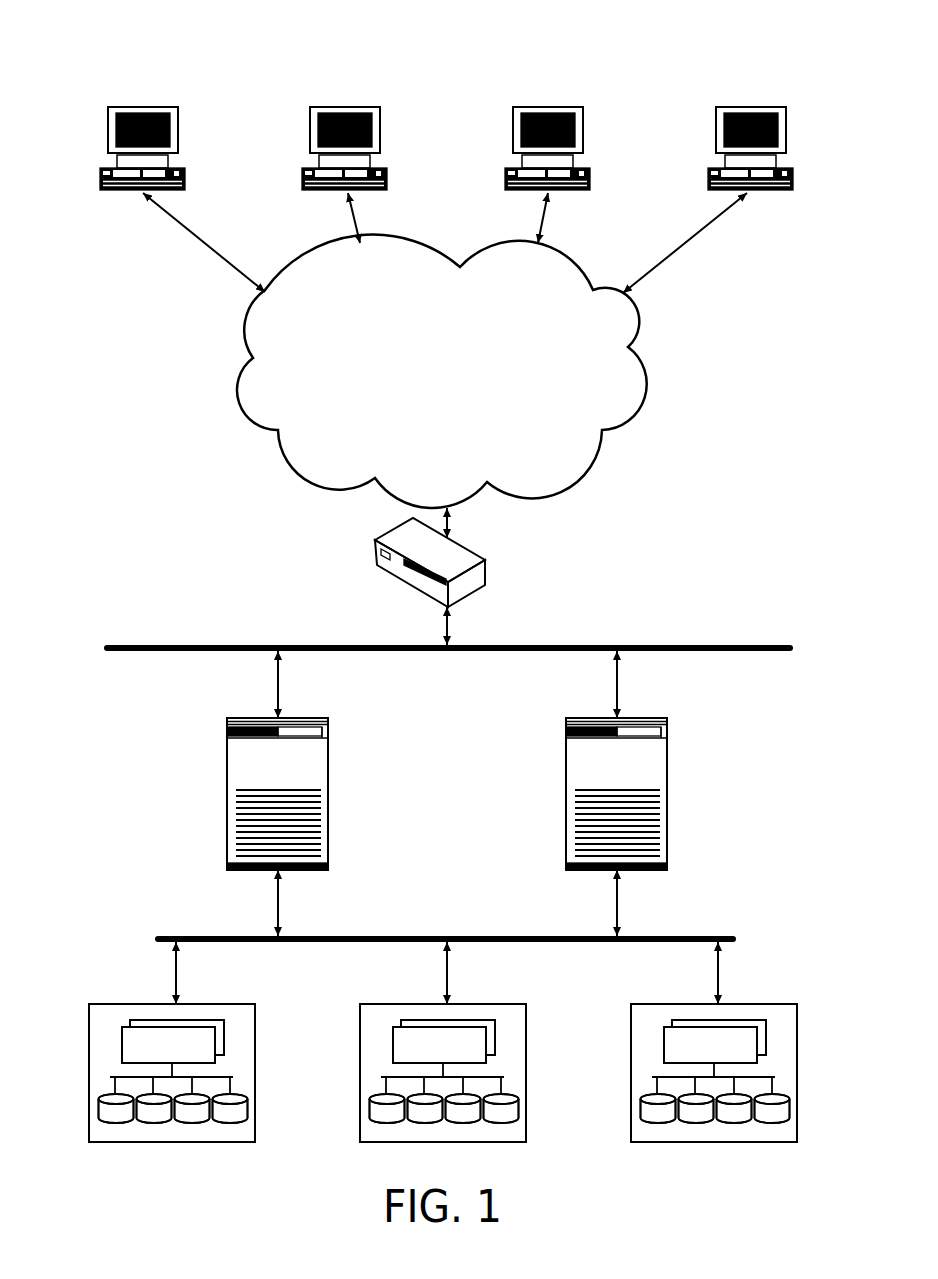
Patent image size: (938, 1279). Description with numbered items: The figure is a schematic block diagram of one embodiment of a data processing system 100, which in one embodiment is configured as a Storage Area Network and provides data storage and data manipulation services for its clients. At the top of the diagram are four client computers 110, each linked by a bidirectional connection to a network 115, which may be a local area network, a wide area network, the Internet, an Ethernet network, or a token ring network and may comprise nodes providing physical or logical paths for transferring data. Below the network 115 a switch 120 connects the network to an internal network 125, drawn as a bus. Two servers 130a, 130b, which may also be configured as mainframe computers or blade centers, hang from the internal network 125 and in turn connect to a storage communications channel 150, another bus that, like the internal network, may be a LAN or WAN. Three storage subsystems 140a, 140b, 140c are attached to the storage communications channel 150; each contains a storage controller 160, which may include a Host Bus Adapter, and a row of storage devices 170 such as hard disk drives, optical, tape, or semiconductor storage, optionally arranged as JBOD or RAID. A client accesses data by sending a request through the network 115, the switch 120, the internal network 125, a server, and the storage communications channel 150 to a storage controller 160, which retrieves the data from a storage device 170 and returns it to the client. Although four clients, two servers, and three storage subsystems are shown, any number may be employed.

The data processing system 100 is at (104, 60).
The client computer 110 is at (178, 107).
The network 115 is at (421, 396).
The switch 120 is at (485, 560).
The internal network 125 is at (127, 648).
The server 130a is at (328, 718).
The server 130b is at (667, 718).
The storage communications channel 150 is at (375, 936).
The storage subsystem 140a is at (255, 1004).
The storage subsystem 140b is at (526, 1004).
The storage subsystem 140c is at (797, 1004).
The storage controller 160 is at (122, 1040).
The storage device 170 is at (98, 1107).